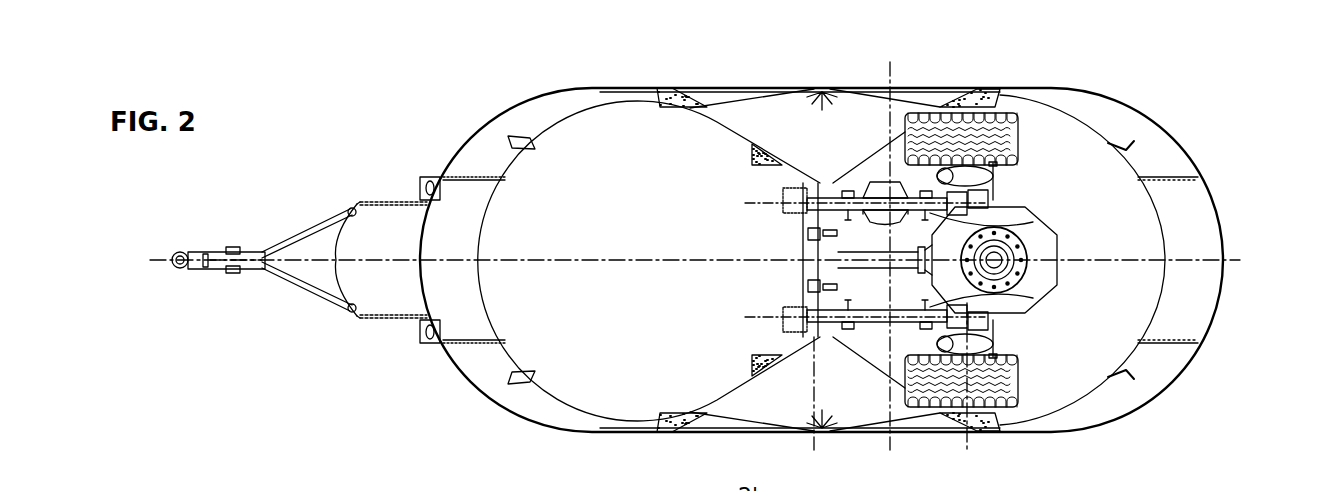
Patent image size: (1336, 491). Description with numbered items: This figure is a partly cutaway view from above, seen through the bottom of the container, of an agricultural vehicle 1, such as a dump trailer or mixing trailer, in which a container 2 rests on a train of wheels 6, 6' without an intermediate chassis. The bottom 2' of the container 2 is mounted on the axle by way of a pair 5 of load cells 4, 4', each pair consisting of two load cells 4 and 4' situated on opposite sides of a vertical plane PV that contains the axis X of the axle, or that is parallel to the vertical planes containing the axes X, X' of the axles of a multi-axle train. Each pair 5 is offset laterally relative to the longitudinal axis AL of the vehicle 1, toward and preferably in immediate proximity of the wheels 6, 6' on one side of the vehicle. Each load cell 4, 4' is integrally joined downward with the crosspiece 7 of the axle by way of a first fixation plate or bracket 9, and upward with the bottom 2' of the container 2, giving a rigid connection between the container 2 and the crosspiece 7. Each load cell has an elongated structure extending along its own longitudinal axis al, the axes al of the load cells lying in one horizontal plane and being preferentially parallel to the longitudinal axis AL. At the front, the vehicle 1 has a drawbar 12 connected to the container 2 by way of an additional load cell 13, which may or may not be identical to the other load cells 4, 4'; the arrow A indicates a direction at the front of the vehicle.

The agricultural vehicle 1 is at (1190, 397).
The container 2 is at (1119, 260).
The bottom 2' is at (633, 255).
The load cell 4 is at (862, 260).
The load cell 4' is at (964, 261).
The pair of load cells 5 is at (710, 289).
The wheel 6 is at (751, 310).
The wheel 6' is at (948, 301).
The crosspiece 7 is at (798, 272).
The first fixation plate or bracket 9 is at (894, 172).
The drawbar 12 is at (325, 326).
The additional load cell 13 is at (229, 248).
The direction of travel A is at (88, 215).
The longitudinal axis AL is at (1238, 258).
The longitudinal axis al is at (762, 320).
The axis X is at (799, 413).
The vertical plane PV is at (890, 437).
The axis X' is at (984, 396).